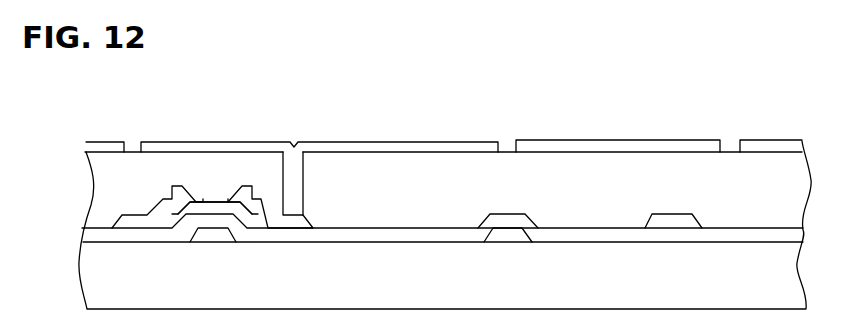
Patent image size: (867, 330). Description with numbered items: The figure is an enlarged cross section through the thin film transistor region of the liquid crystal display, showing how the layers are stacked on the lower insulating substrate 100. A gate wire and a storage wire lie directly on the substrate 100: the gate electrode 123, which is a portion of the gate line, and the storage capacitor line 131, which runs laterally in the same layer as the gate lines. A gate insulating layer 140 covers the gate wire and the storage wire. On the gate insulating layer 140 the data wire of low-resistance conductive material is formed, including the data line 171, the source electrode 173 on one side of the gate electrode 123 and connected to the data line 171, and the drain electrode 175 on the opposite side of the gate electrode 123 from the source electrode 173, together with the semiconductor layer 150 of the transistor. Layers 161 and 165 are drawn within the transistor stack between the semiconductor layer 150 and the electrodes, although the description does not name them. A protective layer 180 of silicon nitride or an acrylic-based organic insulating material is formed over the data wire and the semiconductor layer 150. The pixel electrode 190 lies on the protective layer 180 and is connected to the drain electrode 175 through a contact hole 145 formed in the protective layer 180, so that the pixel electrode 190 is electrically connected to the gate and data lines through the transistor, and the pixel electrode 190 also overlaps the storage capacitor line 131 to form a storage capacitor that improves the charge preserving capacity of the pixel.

The lower insulating substrate 100 is at (97, 280).
The gate electrode 123 is at (217, 238).
The storage capacitor line 131 is at (512, 237).
The gate insulating layer 140 is at (292, 237).
The contact hole 145 is at (293, 162).
The semiconductor layer 150 is at (176, 222).
The ohmic contact layer 161 is at (194, 192).
The ohmic contact layer 165 is at (230, 192).
The data line 171 is at (675, 223).
The source electrode 173 is at (163, 198).
The drain electrode 175 is at (262, 183).
The protective layer 180 is at (102, 148).
The pixel electrode 190 is at (608, 140).